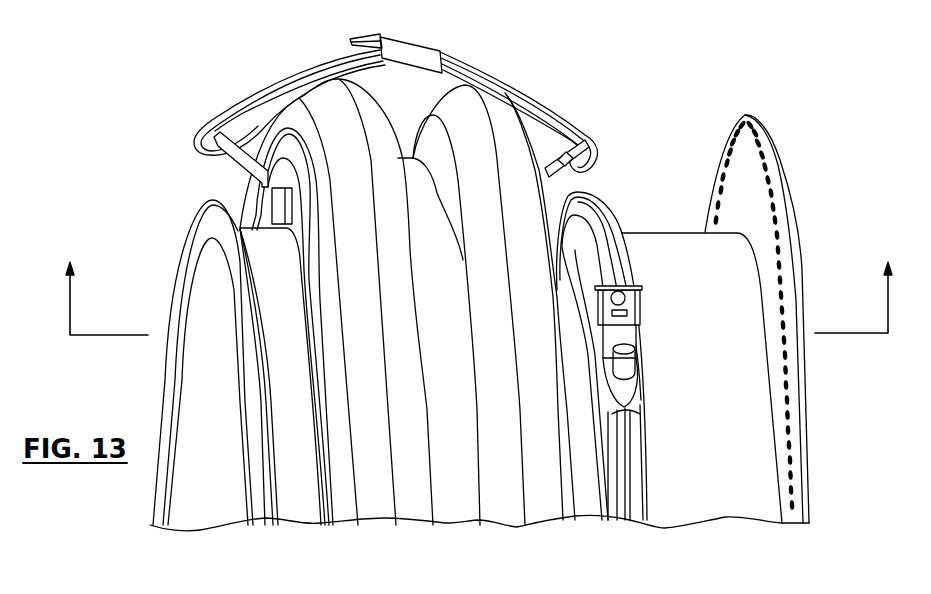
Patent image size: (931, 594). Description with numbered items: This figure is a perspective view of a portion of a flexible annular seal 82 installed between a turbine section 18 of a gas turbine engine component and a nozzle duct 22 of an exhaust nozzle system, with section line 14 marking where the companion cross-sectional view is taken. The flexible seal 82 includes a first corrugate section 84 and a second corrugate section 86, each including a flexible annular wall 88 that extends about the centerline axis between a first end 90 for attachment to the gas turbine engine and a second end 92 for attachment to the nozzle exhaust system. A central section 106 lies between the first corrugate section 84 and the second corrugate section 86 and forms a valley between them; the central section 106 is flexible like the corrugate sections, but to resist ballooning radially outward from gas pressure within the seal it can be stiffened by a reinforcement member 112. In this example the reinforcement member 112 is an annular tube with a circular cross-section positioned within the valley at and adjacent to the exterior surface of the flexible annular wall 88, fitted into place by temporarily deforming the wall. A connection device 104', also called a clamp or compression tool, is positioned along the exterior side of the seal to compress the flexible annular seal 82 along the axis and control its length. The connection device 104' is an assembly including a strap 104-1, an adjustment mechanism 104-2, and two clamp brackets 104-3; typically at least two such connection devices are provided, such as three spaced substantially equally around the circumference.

The section line 14- 14 is at (480, 289).
The turbine section 18 is at (303, 513).
The nozzle duct 22 is at (730, 508).
The flexible annular seal 82 is at (518, 537).
The first corrugate section 84 is at (410, 513).
The second corrugate section 86 is at (556, 513).
The flexible annular wall 88 is at (432, 102).
The first end 90 is at (329, 514).
The second end 92 is at (570, 504).
The connection device 104' is at (518, 112).
The strap 104-1 is at (243, 94).
The adjustment mechanism 104-2 is at (427, 40).
The clamp bracket 104-3 is at (238, 166).
The central section 106 is at (482, 516).
The reinforcement member 112 is at (477, 504).